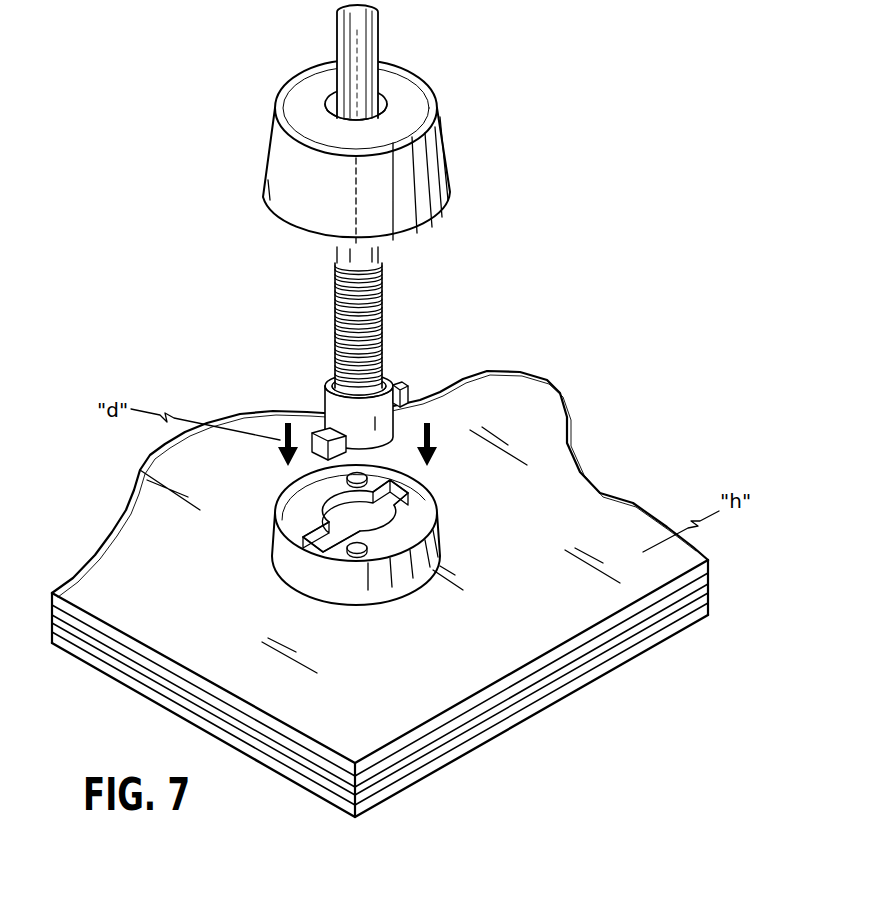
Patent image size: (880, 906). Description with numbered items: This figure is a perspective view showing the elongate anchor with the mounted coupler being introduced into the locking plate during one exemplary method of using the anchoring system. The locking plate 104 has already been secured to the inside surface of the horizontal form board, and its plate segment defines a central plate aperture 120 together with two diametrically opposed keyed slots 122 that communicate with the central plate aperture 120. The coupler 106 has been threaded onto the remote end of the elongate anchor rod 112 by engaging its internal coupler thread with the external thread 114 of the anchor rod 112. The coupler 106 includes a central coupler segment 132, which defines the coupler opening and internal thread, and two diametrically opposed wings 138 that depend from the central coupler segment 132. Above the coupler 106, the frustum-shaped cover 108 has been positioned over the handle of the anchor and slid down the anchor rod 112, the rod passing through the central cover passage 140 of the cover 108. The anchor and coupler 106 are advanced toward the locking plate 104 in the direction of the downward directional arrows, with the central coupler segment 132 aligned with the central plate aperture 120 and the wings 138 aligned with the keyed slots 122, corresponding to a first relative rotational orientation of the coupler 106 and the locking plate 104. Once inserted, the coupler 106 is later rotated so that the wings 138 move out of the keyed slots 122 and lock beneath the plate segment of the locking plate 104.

The locking plate 104 is at (461, 510).
The coupler 106 is at (324, 382).
The cover 108 is at (386, 151).
The elongate anchor rod 112 is at (385, 60).
The external thread 114 is at (314, 319).
The central plate aperture 120 is at (236, 609).
The keyed slots 122 is at (325, 455).
The central coupler segment 132 is at (391, 359).
The wings 138 is at (314, 399).
The central cover passage 140 is at (297, 68).